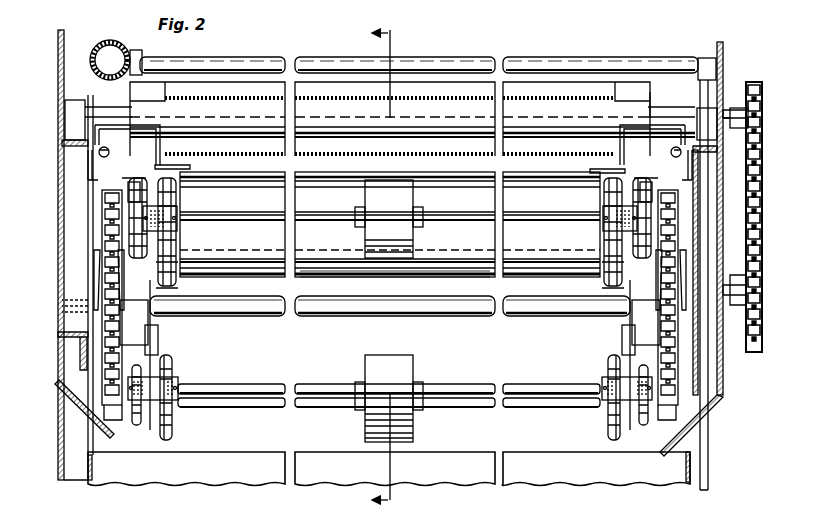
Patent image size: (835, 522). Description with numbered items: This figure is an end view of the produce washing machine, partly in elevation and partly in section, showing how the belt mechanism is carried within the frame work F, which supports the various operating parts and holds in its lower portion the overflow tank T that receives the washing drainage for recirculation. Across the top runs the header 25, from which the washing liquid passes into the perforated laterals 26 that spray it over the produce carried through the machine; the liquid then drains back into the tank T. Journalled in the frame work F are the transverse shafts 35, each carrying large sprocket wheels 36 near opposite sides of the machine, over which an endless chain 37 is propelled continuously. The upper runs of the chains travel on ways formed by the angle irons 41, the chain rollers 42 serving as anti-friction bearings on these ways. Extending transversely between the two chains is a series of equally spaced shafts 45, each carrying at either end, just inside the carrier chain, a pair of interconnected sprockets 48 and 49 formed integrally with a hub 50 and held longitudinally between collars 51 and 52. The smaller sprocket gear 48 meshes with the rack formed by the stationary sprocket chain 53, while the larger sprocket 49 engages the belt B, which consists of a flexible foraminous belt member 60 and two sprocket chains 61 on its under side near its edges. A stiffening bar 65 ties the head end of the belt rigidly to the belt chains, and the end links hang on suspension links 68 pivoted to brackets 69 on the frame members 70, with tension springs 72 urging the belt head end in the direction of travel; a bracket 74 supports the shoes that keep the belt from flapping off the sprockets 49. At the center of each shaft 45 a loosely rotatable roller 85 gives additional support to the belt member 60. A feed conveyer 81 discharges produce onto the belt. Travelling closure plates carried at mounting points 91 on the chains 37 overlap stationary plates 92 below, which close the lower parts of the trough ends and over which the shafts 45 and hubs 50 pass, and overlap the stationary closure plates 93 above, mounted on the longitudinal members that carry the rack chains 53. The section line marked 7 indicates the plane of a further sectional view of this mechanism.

The section line 7- 7 is at (391, 273).
The header 25 is at (119, 40).
The perforated laterals 26 is at (586, 62).
The transverse shafts 35 is at (331, 318).
The sprocket wheels 36 is at (126, 334).
The endless chain 37 is at (142, 347).
The angle irons 41 is at (100, 228).
The rollers 42 is at (106, 355).
The shafts 45 is at (440, 220).
The sprocket gear 48 is at (672, 228).
The sprocket 49 is at (177, 230).
The hub 50 is at (160, 380).
The collar 51 is at (174, 412).
The collar 52 is at (88, 418).
The sprocket chain 53 is at (128, 187).
The belt member 60 is at (462, 280).
The sprocket chains 61 is at (180, 284).
The stiffening bar 65 is at (273, 183).
The suspension links 68 is at (190, 166).
The brackets 69 is at (62, 127).
The frame members 70 is at (72, 150).
The tension springs 72 is at (72, 177).
The bracket 74 is at (172, 128).
The feed conveyer 81 is at (528, 92).
The roller 85 is at (438, 436).
The mounting points 91 is at (182, 318).
The stationary plates 92 is at (118, 265).
The stationary closure plates 93 is at (156, 162).
The belt B is at (420, 282).
The frame work F is at (72, 199).
The overflow tank T is at (696, 472).